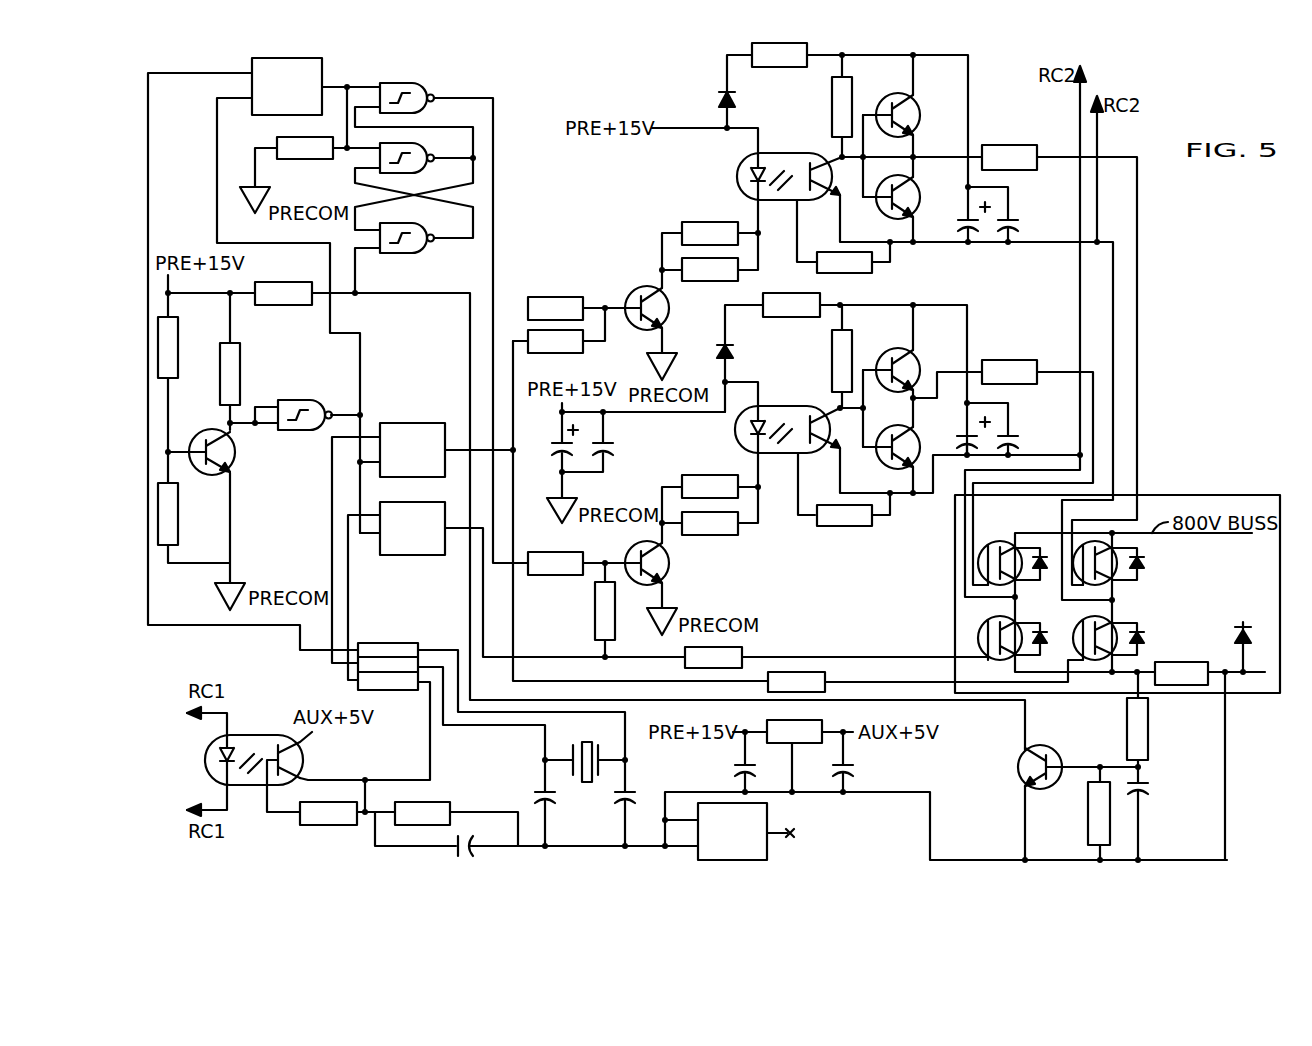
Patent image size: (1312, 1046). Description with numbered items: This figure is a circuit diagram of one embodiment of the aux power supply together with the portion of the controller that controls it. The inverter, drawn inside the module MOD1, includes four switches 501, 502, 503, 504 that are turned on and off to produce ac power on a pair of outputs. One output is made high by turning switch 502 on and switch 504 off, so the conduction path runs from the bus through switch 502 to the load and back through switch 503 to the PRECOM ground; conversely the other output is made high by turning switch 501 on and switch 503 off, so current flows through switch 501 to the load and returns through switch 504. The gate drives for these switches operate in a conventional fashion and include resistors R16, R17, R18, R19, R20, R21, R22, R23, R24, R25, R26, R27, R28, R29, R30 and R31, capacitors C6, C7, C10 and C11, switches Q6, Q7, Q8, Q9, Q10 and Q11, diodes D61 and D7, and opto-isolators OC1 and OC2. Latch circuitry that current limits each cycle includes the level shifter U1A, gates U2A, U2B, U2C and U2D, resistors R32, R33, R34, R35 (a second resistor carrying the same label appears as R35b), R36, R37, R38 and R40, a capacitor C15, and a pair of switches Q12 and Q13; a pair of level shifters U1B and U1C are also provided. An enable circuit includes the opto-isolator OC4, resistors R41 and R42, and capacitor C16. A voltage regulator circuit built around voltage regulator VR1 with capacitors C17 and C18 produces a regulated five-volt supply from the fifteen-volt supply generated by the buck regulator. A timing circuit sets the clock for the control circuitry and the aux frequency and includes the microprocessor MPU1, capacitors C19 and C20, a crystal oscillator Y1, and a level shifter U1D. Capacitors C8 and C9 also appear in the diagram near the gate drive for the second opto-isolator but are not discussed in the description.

The level shifter U1A is at (287, 86).
The level shifter U1B is at (412, 450).
The level shifter U1C is at (412, 528).
The level shifter U1D is at (732, 831).
The gate U2A is at (424, 92).
The gate U2B is at (427, 152).
The gate U2C is at (427, 231).
The gate U2D is at (305, 402).
The microprocessor MPU1 is at (388, 654).
The IGBT module MOD1 is at (1149, 603).
The switch 501 is at (990, 541).
The switch 502 is at (1140, 578).
The switch 503 is at (977, 640).
The switch 504 is at (1140, 650).
The opto-isolator OC1 is at (770, 176).
The opto-isolator OC2 is at (769, 429).
The opto-isolator OC4 is at (254, 747).
The switch Q6 is at (888, 109).
The switch Q7 is at (888, 206).
The switch Q8 is at (891, 356).
The switch Q9 is at (888, 455).
The switch Q10 is at (640, 297).
The switch Q11 is at (668, 563).
The switch Q12 is at (1022, 767).
The switch Q13 is at (225, 452).
The resistor R16 is at (779, 55).
The resistor R17 is at (824, 107).
The resistor R18 is at (844, 262).
The resistor R19 is at (1009, 157).
The resistor R20 is at (791, 305).
The resistor R21 is at (844, 515).
The resistor R22 is at (825, 361).
The resistor R23 is at (1009, 372).
The resistor R24 is at (710, 233).
The resistor R25 is at (710, 269).
The resistor R26 is at (710, 486).
The resistor R27 is at (710, 523).
The resistor R28 is at (555, 341).
The resistor R29 is at (555, 308).
The resistor R30 is at (555, 563).
The resistor R31 is at (586, 613).
The resistor R32 is at (713, 657).
The resistor R33 is at (796, 682).
The resistor R34 is at (317, 162).
The resistor R35 is at (283, 293).
The resistor R35b is at (188, 514).
The resistor R36 is at (1158, 729).
The resistor R37 is at (1081, 813).
The resistor R38 is at (188, 347).
The resistor R40 is at (251, 373).
The resistor R41 is at (328, 813).
The resistor R42 is at (422, 813).
The capacitor C6 is at (966, 214).
The capacitor C7 is at (1020, 214).
The capacitor C8 is at (552, 440).
The capacitor C9 is at (618, 445).
The capacitor C10 is at (960, 430).
The capacitor C11 is at (1025, 430).
The capacitor C15 is at (1158, 790).
The capacitor C16 is at (486, 839).
The capacitor C17 is at (864, 770).
The capacitor C18 is at (728, 770).
The capacitor C19 is at (529, 786).
The capacitor C20 is at (611, 809).
The diode D7 is at (741, 355).
The diode D61 is at (713, 111).
The voltage regulator VR1 is at (794, 731).
The crystal oscillator Y1 is at (574, 731).